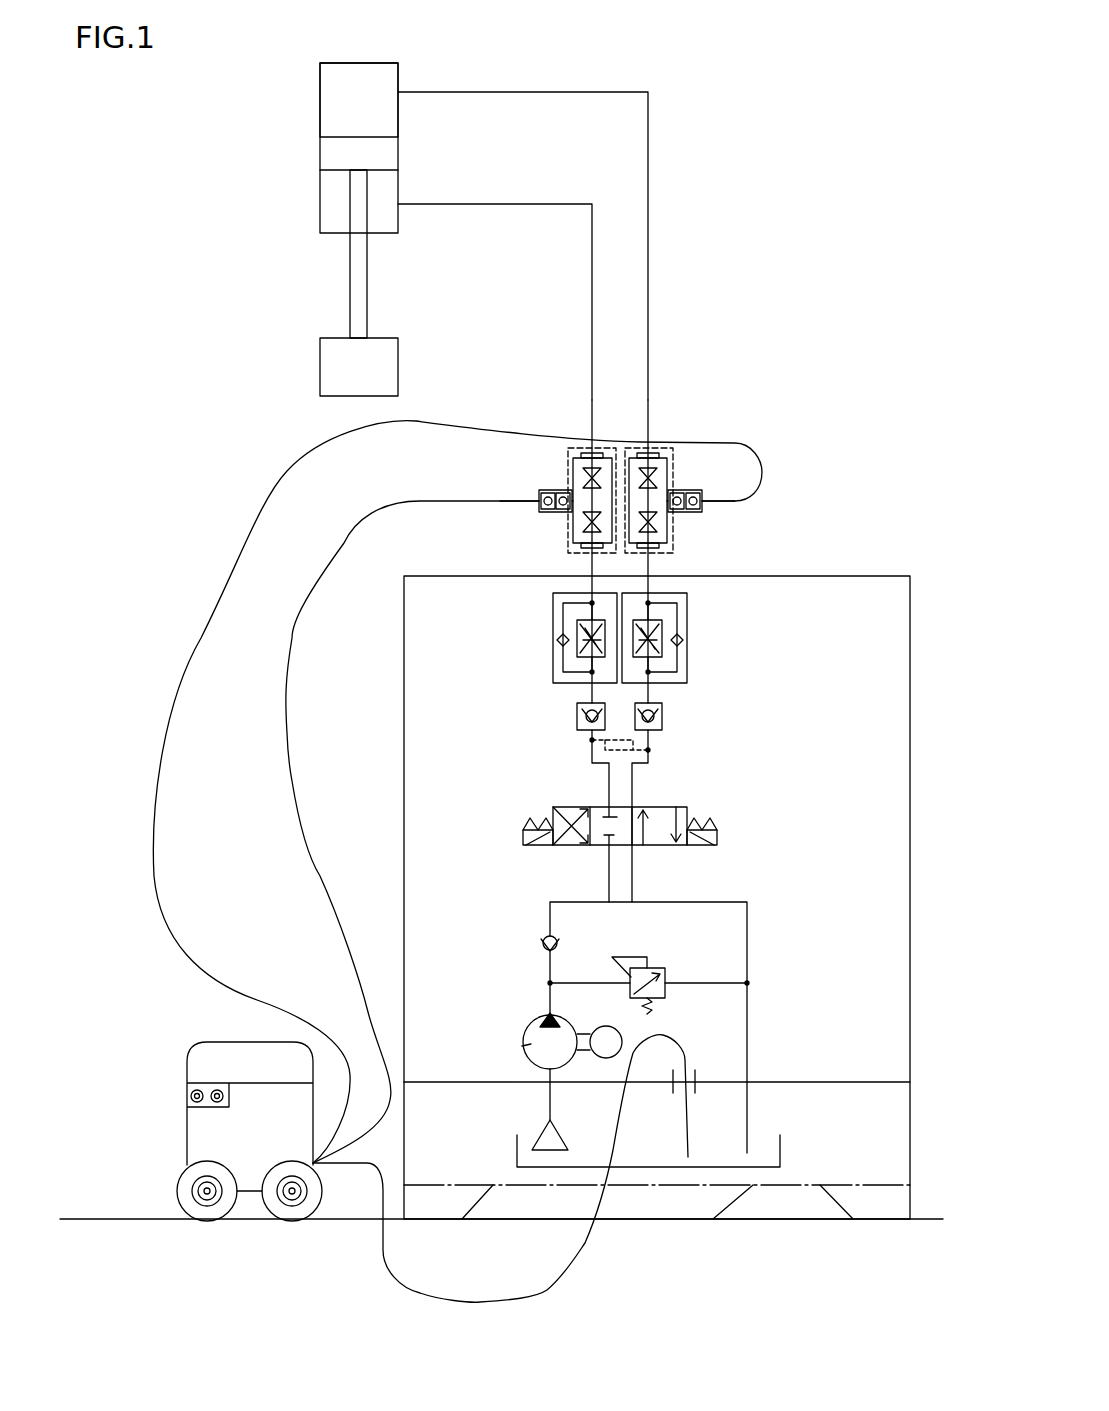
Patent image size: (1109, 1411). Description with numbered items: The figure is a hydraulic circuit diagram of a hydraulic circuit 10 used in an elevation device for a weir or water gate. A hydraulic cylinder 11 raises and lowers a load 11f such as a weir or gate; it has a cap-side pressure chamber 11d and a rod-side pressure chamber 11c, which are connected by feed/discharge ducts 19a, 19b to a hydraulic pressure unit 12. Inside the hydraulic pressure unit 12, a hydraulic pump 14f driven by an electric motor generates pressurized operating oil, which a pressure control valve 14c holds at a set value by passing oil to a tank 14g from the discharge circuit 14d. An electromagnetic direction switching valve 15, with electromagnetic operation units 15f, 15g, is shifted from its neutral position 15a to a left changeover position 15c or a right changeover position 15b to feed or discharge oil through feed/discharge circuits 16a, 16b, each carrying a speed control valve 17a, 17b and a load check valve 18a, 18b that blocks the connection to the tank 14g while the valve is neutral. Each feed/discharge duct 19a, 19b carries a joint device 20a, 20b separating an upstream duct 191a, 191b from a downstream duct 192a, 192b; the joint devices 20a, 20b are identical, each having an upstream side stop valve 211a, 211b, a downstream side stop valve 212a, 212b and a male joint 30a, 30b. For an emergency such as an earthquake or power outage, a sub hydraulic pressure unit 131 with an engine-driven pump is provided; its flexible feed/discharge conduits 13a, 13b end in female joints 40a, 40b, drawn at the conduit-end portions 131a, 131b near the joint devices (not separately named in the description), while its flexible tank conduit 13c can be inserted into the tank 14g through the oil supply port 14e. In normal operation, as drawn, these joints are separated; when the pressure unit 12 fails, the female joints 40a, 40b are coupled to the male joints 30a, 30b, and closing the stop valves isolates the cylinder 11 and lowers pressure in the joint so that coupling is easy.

The hydraulic circuit 10 is at (786, 118).
The hydraulic cylinder 11 is at (330, 140).
The cap-side pressure chamber 11d is at (330, 78).
The rod-side pressure chamber 11c is at (330, 192).
The load 11f is at (323, 357).
The feed/discharge duct 19a is at (482, 92).
The feed/discharge duct 19b is at (482, 205).
The downstream duct 192a is at (673, 450).
The downstream duct 192b is at (567, 448).
The upstream duct 191a is at (650, 563).
The upstream duct 191b is at (592, 563).
The joint device 20a is at (673, 512).
The joint device 20b is at (568, 512).
The downstream side stop valve 212a is at (660, 482).
The downstream side stop valve 212b is at (583, 480).
The upstream side stop valve 211a is at (660, 525).
The upstream side stop valve 211b is at (583, 525).
The male joint 30a is at (683, 490).
The male joint 30b is at (565, 490).
The female joint 40a is at (695, 490).
The female joint 40b is at (540, 490).
The hose connector 131a is at (750, 453).
The hose connector 131b is at (538, 497).
The flexible feed/discharge conduit 13a is at (159, 905).
The flexible feed/discharge conduit 13b is at (292, 781).
The flexible tank conduit 13c is at (380, 1225).
The sub hydraulic pressure unit 131 is at (197, 1052).
The hydraulic pressure unit 12 is at (833, 577).
The feed/discharge circuit 16a is at (687, 593).
The feed/discharge circuit 16b is at (556, 593).
The speed control valve 17a is at (687, 615).
The speed control valve 17b is at (553, 615).
The load check valve 18a is at (662, 715).
The load check valve 18b is at (577, 712).
The electromagnetic direction switching valve 15 is at (637, 805).
The neutral position 15a is at (615, 800).
The right changeover position 15b is at (683, 807).
The left changeover position 15c is at (575, 807).
The electromagnetic operation unit 15f is at (717, 840).
The electromagnetic operation unit 15g is at (545, 847).
The discharge circuit 14d is at (747, 1039).
The hydraulic pump 14f is at (532, 1045).
The pressure control valve 14c is at (655, 965).
The oil supply port 14e is at (695, 1090).
The tank 14g is at (753, 1167).